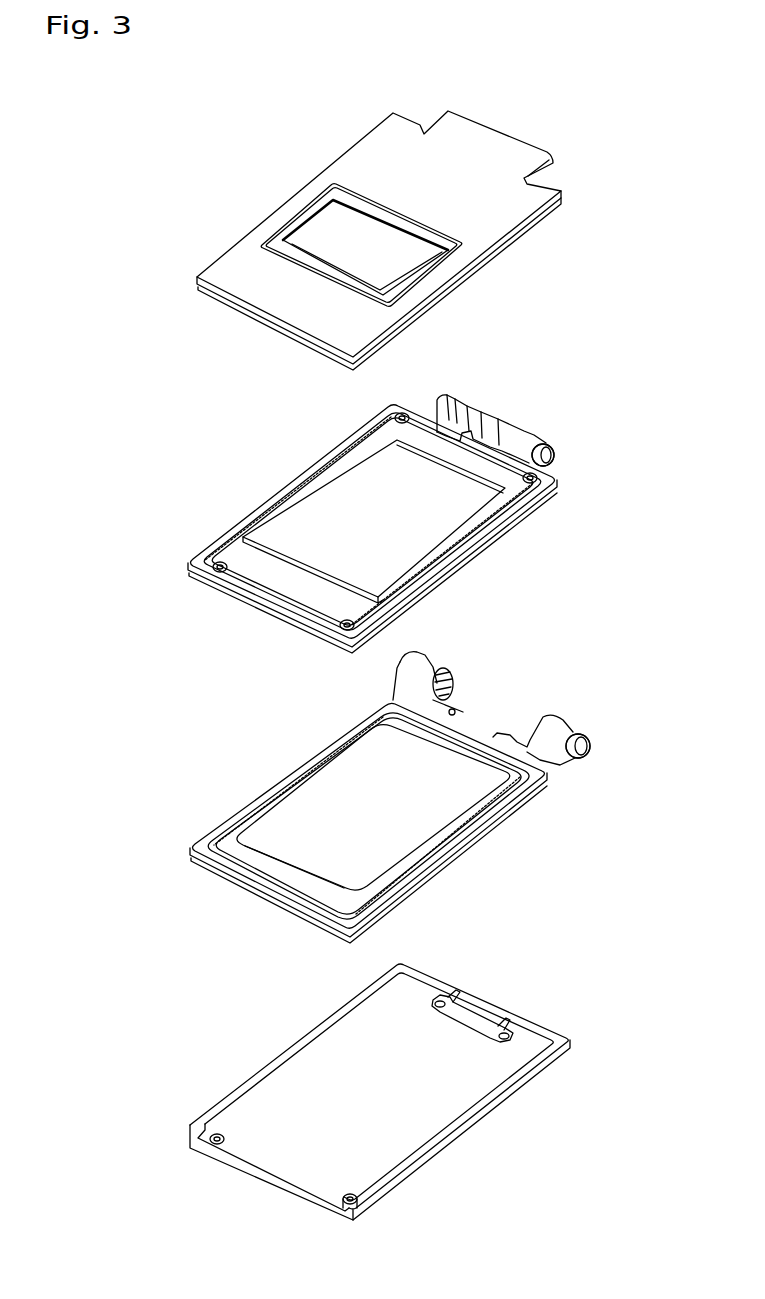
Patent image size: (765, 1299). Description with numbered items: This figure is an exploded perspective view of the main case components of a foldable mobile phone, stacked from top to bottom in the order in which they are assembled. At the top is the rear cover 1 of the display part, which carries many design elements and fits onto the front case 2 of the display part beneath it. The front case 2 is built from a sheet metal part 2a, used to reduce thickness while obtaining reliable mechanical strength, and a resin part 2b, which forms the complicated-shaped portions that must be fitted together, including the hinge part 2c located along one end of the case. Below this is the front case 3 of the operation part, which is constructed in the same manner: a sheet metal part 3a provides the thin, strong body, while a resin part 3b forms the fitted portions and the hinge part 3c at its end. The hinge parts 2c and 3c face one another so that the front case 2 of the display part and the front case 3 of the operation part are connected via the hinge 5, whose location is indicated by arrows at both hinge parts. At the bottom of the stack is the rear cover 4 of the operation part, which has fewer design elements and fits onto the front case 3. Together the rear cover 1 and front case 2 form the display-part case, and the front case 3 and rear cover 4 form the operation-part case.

The rear cover of the display part 1 is at (520, 233).
The front case of the display part 2 is at (395, 524).
The sheet metal part 2a is at (353, 488).
The resin part 2b is at (293, 583).
The hinge part 2c is at (540, 448).
The front case of the operation part 3 is at (382, 794).
The sheet metal part 3a is at (350, 787).
The resin part 3b is at (280, 870).
The hinge part 3c is at (423, 667).
The rear cover of the operation part 4 is at (493, 1110).
The hinge 5 is at (500, 443).